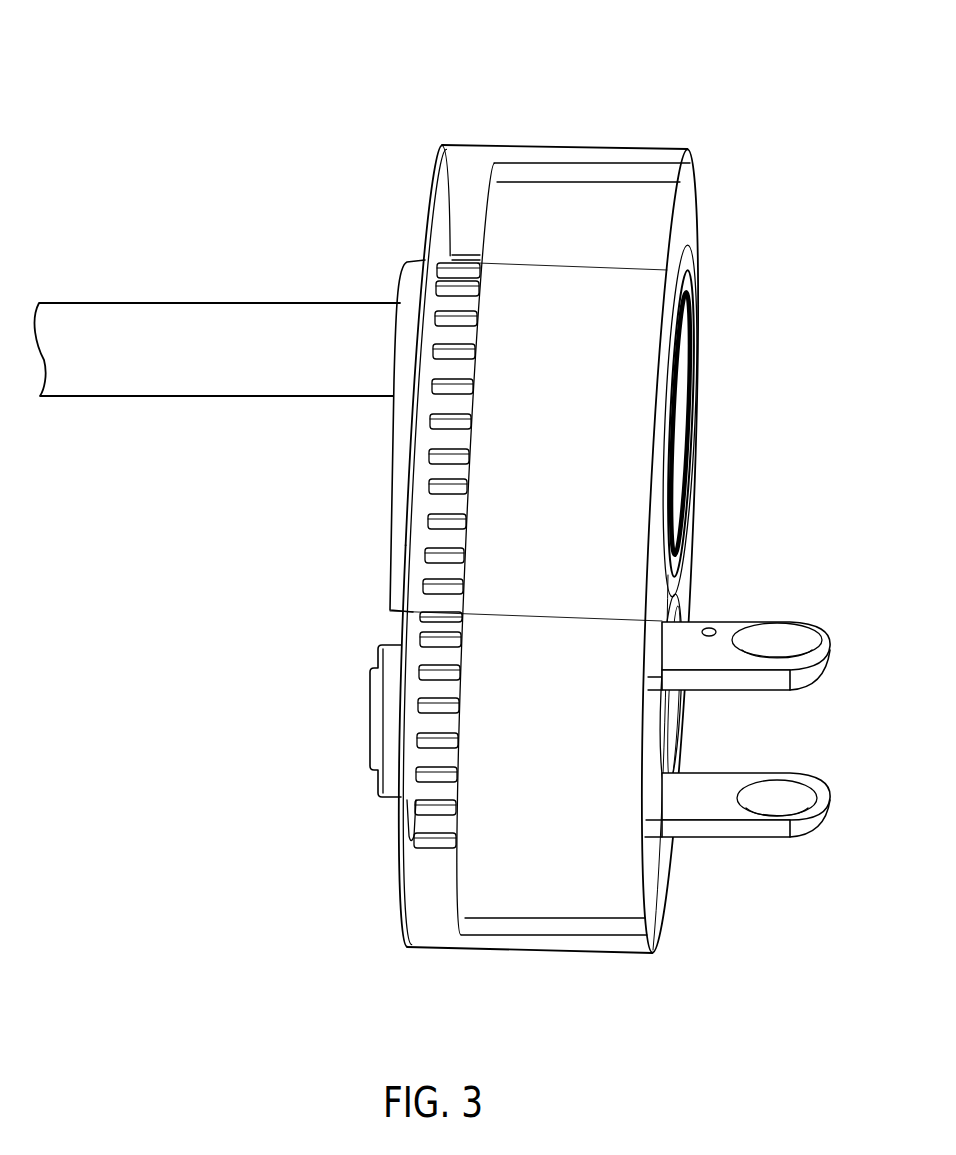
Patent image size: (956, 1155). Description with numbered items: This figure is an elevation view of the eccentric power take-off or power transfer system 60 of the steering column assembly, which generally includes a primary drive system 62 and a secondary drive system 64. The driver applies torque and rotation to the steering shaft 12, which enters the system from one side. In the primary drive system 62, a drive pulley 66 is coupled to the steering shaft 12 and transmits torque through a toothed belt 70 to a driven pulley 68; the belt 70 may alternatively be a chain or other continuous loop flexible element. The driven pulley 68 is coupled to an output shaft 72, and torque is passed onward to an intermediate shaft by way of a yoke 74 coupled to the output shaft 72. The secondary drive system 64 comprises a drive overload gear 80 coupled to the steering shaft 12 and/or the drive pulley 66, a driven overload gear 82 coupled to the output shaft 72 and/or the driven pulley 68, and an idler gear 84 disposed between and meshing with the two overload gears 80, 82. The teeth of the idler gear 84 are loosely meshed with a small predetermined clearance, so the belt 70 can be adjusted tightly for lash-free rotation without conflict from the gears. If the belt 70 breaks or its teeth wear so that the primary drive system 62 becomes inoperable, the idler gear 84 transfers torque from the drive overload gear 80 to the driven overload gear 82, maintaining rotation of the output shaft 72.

The power transfer system 60 is at (195, 92).
The steering shaft 12 is at (237, 303).
The primary drive system 62 is at (573, 973).
The secondary drive system 64 is at (367, 802).
The drive pulley 66 is at (682, 200).
The driven pulley 68 is at (647, 875).
The toothed belt 70 is at (623, 173).
The output shaft 72 is at (668, 740).
The yoke 74 is at (801, 840).
The drive overload gear 80 is at (459, 273).
The driven overload gear 82 is at (426, 842).
The idler gear 84 is at (432, 542).